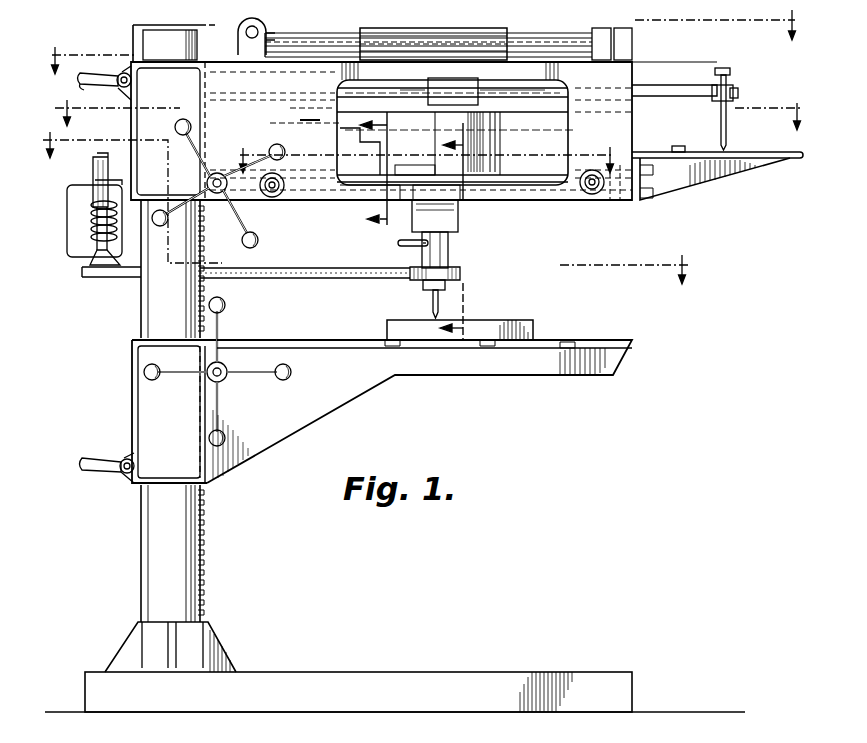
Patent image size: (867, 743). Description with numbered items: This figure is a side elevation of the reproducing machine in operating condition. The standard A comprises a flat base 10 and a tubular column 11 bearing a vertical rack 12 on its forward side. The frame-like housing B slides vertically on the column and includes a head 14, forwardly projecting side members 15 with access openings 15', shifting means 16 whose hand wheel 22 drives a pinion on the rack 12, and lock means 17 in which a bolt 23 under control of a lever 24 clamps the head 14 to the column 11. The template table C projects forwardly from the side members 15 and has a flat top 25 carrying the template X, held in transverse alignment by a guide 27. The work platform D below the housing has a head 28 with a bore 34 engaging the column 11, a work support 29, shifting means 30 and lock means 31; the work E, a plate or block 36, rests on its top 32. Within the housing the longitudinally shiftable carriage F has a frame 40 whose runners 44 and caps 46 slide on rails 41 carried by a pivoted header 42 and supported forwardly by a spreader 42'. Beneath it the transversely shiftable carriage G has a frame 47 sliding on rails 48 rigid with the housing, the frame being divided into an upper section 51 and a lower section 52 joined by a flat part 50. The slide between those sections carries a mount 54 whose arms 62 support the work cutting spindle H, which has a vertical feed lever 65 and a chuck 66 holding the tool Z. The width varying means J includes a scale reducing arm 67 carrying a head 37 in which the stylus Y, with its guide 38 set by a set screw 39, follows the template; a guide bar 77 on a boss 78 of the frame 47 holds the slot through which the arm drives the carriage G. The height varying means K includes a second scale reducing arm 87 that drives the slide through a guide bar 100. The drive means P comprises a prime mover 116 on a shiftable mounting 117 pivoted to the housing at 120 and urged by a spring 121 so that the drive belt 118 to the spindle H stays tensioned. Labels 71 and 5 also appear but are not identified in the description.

The base 10 is at (357, 680).
The column 11 is at (195, 583).
The rack 12 is at (204, 540).
The head 14 is at (172, 72).
The side members 15 is at (362, 208).
The access openings 15' is at (474, 130).
The shifting means 16 is at (270, 251).
The lock means 17 is at (122, 92).
The hand wheel 22 is at (242, 240).
The bolt 23 is at (120, 75).
The lever 24 is at (80, 85).
The flat top 25 is at (790, 158).
The guide 27 is at (674, 146).
The head 28 is at (145, 427).
The work support 29 is at (340, 396).
The shifting means 30 is at (225, 326).
The lock means 31 is at (96, 480).
The top 32 is at (614, 342).
The bore 34 is at (142, 408).
The plate or block 36 is at (387, 330).
The head 37 is at (712, 97).
The guide 38 is at (723, 68).
The set screw 39 is at (735, 95).
The frame 40 is at (505, 27).
The rails 41 is at (556, 40).
The header 42 is at (248, 34).
The spreader 42' is at (629, 44).
The runners 44 is at (455, 47).
The caps 46 is at (398, 30).
The frame 47 is at (438, 160).
The rails 48 is at (272, 197).
The flat horizontal part 50 is at (360, 197).
The upper section 51 is at (407, 172).
The lower section 52 is at (490, 200).
The mount 54 is at (462, 220).
The arms 62 is at (412, 224).
The lever 65 is at (398, 246).
The collet or chuck 66 is at (424, 285).
The scale reducing arm 67 is at (694, 85).
The motor housing 71 is at (527, 96).
The guide bar 77 is at (566, 110).
The boss 78 is at (503, 135).
The scale reducing arm 87 is at (313, 120).
The guide bar 100 is at (280, 142).
The prime mover 116 is at (66, 249).
The shiftable mounting 117 is at (93, 194).
The drive belt 118 is at (249, 270).
The pivot 120 is at (90, 236).
The spring 121 is at (90, 222).
The standard A is at (140, 540).
The frame-like housing B is at (540, 205).
The template table C is at (722, 182).
The work platform D is at (628, 362).
The work E is at (536, 323).
The longitudinally shiftable carriage F is at (358, 30).
The transversely shiftable carriage G is at (525, 165).
The work cutting spindle H is at (450, 250).
The width varying means J is at (646, 84).
The height varying means K is at (280, 115).
The drive means P is at (82, 188).
The template X is at (760, 150).
The stylus Y is at (718, 117).
The cutter or tool Z is at (430, 304).
The belt 5 is at (520, 175).